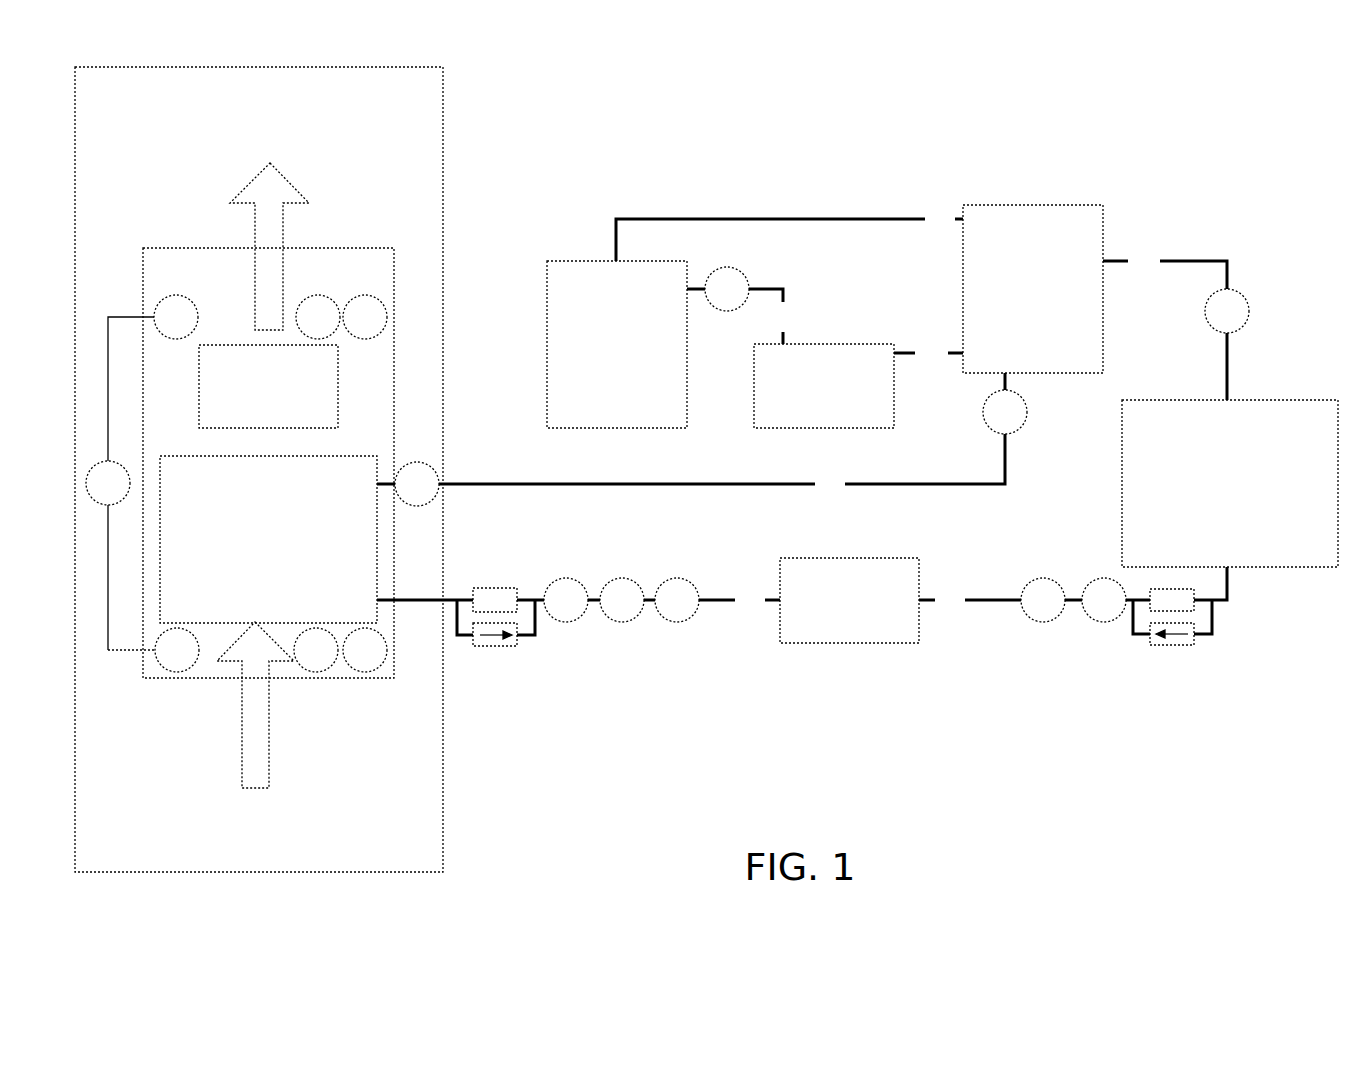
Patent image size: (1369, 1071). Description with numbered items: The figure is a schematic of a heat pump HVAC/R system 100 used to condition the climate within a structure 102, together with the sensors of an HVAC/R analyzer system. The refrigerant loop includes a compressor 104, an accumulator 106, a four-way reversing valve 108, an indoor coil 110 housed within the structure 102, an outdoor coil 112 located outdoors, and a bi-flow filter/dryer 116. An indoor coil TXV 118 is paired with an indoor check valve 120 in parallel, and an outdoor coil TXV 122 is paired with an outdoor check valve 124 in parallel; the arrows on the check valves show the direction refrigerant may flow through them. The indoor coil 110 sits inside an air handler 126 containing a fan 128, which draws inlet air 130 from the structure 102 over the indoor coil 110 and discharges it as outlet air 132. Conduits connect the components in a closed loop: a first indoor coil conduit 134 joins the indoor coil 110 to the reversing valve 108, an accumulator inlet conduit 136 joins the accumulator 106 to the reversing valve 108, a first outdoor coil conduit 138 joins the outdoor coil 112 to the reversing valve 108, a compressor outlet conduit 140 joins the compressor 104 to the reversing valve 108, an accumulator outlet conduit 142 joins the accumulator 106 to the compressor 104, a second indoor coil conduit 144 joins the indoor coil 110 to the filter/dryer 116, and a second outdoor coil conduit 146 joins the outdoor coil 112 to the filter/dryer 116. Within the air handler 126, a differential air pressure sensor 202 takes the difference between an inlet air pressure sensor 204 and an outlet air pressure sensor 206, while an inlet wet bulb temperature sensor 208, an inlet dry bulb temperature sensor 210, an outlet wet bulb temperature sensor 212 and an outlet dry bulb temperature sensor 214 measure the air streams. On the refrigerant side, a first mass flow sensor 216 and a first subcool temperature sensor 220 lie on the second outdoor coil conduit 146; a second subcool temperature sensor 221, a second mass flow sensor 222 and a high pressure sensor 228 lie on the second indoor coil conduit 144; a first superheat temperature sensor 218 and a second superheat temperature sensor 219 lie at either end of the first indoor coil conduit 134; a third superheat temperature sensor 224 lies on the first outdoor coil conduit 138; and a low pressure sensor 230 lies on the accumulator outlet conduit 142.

The HVAC/R system 100 is at (1256, 147).
The structure 102 is at (124, 121).
The compressor 104 is at (824, 386).
The accumulator 106 is at (617, 344).
The 4-way reversing valve 108 is at (1033, 289).
The indoor coil 110 is at (268, 539).
The outdoor coil 112 is at (1230, 483).
The bi-flow filter/dryer 116 is at (849, 600).
The indoor coil thermal expansion valve 118 is at (460, 600).
The indoor check valve 120 is at (512, 646).
The outdoor coil TXV valve 122 is at (1188, 589).
The outdoor check valve 124 is at (1167, 645).
The air handler 126 is at (160, 282).
The fan 128 is at (268, 386).
The inlet air 130 is at (255, 735).
The outlet air 132 is at (255, 190).
The first indoor coil conduit 134 is at (910, 463).
The accumulator inlet conduit 136 is at (789, 235).
The first outdoor coil conduit 138 is at (1165, 270).
The compressor outlet conduit 140 is at (928, 353).
The accumulator outlet conduit 142 is at (773, 316).
The second indoor coil conduit 144 is at (758, 600).
The second outdoor coil conduit 146 is at (970, 600).
The differential air pressure sensor 202 is at (120, 483).
The inlet air pressure sensor 204 is at (177, 650).
The outlet air pressure sensor 206 is at (176, 317).
The inlet wet bulb temperature sensor 208 is at (316, 650).
The inlet dry bulb temperature sensor 210 is at (365, 650).
The outlet wet bulb temperature sensor 212 is at (318, 317).
The outlet dry bulb temperature sensor 214 is at (365, 317).
The first mass flow sensor 216 is at (1051, 600).
The first superheat temperature sensor 218 is at (596, 484).
The second superheat temperature sensor 219 is at (1005, 403).
The first subcool temperature sensor 220 is at (1116, 600).
The second subcool temperature sensor 221 is at (572, 600).
The second mass flow sensor 222 is at (627, 600).
The third superheat temperature sensor 224 is at (1227, 344).
The high pressure sensor 228 is at (695, 600).
The low pressure sensor 230 is at (718, 289).